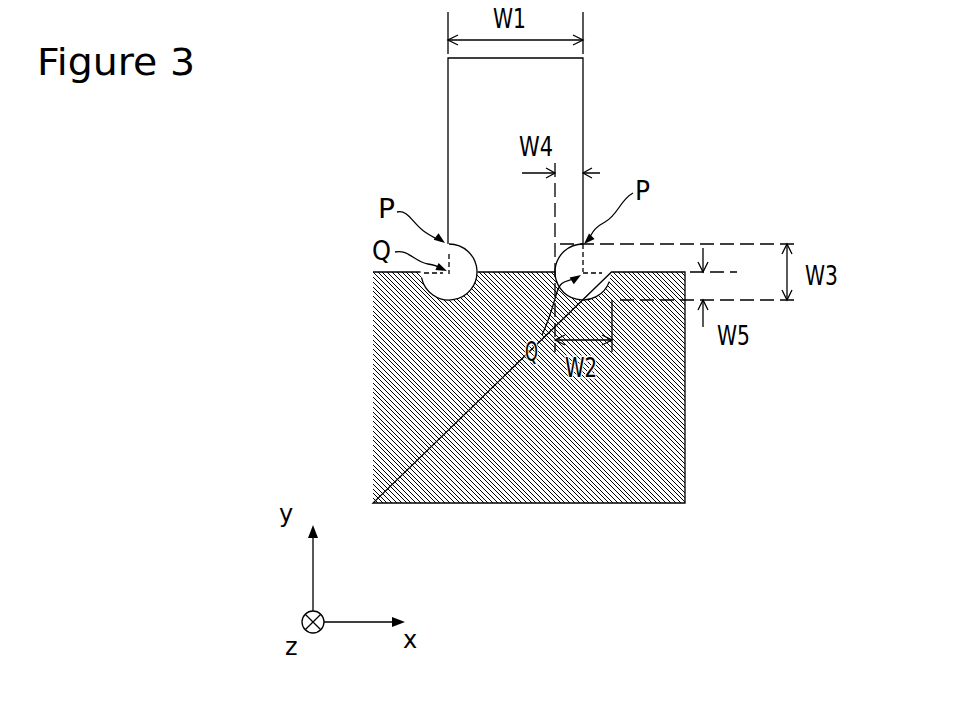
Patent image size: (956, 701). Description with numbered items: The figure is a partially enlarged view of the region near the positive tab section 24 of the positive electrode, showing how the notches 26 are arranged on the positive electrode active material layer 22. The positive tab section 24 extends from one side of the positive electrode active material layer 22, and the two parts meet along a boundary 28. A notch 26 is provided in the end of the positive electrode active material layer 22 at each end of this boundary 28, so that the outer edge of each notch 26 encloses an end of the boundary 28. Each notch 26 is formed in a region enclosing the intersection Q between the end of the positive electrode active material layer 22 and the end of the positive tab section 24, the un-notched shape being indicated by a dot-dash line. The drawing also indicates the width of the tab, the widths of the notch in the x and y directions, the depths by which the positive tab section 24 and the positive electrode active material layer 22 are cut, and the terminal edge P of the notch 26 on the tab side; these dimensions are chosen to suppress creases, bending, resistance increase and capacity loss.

The positive electrode active material layer 22 is at (383, 388).
The positive tab section 24 is at (457, 108).
The notch 26 is at (440, 285).
The boundary 28 is at (515, 272).